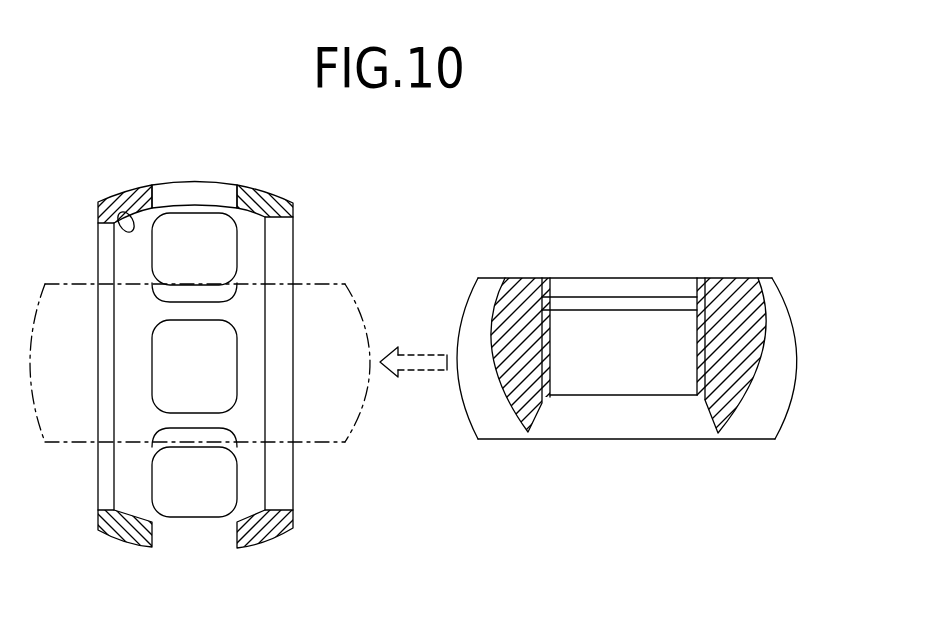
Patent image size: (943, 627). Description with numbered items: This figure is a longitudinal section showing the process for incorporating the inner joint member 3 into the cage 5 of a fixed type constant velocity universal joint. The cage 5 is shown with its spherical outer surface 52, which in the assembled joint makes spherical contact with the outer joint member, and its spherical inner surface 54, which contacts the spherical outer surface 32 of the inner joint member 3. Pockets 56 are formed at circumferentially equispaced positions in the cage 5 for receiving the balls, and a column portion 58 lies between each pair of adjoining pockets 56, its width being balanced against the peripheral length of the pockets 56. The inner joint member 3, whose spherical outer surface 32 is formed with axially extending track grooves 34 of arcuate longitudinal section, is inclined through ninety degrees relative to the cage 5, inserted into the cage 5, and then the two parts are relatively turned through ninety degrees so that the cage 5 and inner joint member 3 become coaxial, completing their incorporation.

The inner joint member 3 is at (518, 278).
The cage 5 is at (358, 415).
The spherical outer surface 32 is at (795, 328).
The track grooves 34 is at (770, 283).
The spherical outer surface 52 is at (135, 185).
The spherical inner surface 54 is at (117, 213).
The pockets 56 is at (203, 230).
The column portion 58 is at (217, 310).